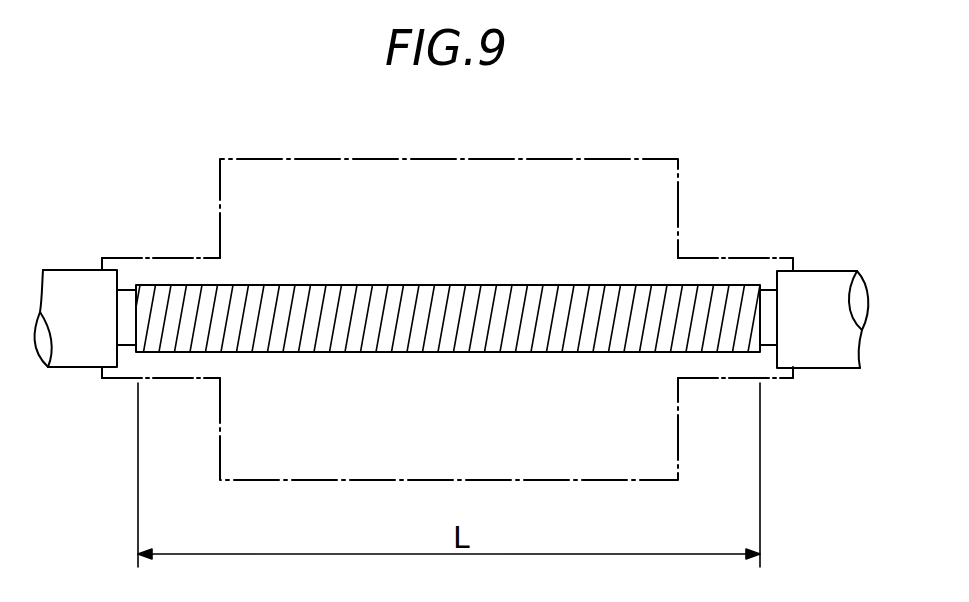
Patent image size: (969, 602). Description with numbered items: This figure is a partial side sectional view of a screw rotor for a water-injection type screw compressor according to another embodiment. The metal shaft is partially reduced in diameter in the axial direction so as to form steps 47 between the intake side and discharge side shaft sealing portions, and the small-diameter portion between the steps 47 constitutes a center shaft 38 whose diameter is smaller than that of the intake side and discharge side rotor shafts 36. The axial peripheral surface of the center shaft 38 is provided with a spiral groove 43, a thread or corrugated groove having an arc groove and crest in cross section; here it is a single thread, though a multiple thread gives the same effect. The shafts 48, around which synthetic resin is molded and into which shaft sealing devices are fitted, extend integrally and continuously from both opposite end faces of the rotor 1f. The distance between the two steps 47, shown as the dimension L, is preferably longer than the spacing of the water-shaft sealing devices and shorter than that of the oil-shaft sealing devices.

The rotor 1f is at (540, 160).
The center shaft 38 is at (445, 285).
The spiral groove 43 is at (622, 312).
The shafts 48 is at (135, 257).
The steps 47 is at (120, 280).
The rotor shafts 36 is at (824, 271).